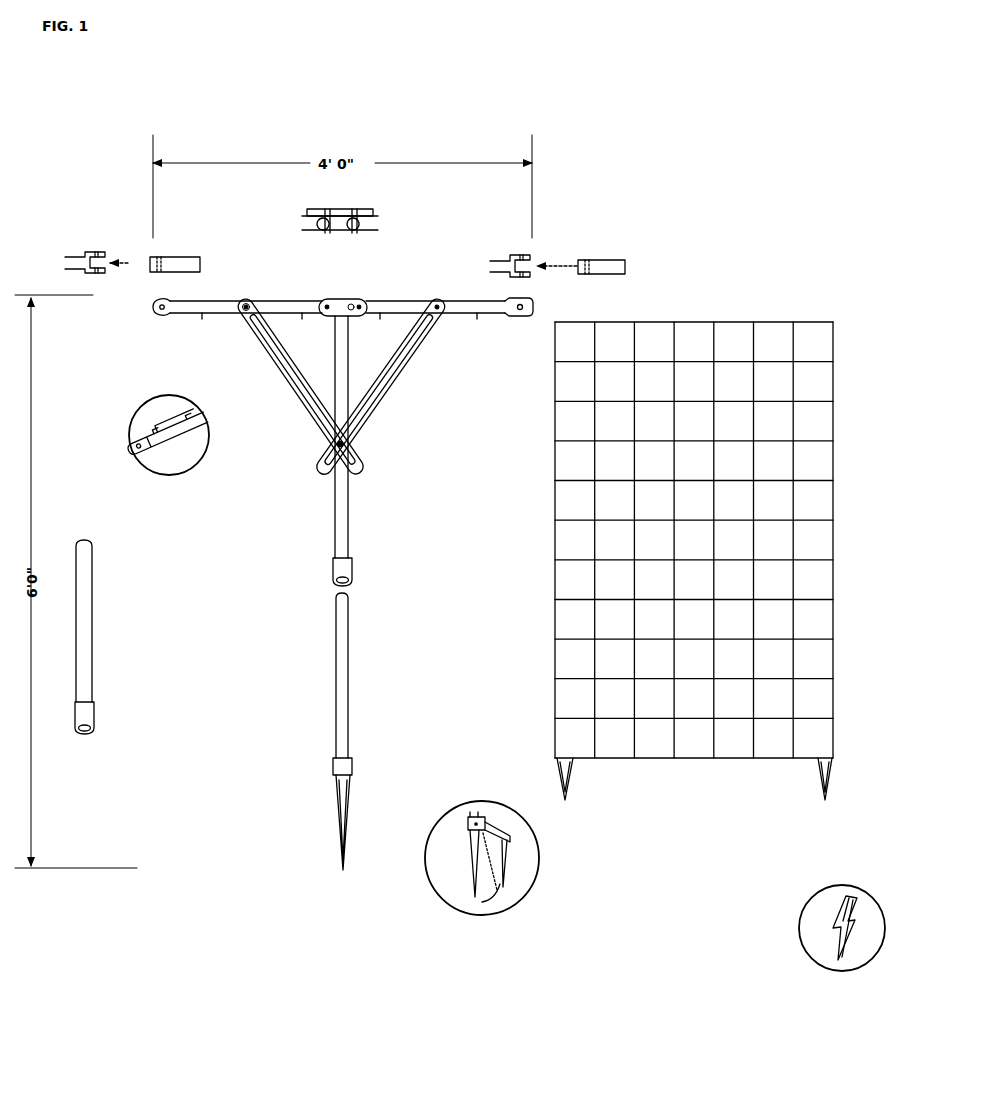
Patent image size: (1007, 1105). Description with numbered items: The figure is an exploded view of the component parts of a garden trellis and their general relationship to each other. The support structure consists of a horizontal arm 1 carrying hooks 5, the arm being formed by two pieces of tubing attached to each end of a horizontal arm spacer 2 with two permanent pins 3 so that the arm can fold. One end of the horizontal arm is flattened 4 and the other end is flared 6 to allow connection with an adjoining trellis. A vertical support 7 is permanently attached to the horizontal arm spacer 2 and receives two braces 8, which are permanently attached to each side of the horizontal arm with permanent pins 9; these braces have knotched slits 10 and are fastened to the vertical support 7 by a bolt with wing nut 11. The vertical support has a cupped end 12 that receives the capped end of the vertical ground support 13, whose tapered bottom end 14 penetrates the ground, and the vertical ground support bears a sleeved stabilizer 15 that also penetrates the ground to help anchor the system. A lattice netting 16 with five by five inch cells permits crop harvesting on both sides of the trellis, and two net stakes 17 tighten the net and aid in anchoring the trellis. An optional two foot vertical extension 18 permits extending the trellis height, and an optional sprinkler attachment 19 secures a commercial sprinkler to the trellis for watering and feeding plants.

The horizontal arm 1 is at (396, 297).
The horizontal arm spacer 2 is at (369, 295).
The permanent pins 3 is at (349, 304).
The flattened end 4 is at (147, 313).
The hooks 5 is at (188, 323).
The flared end 6 is at (537, 306).
The vertical support 7 is at (331, 501).
The braces 8 is at (276, 364).
The permanent pins 9 is at (240, 316).
The knotched slits 10 is at (311, 408).
The bolt with wing nut 11 is at (358, 444).
The vertical support cupped end 12 is at (356, 568).
The vertical ground support 13 is at (327, 687).
The tapered bottom end 14 is at (320, 798).
The sleeved stabilizer 15 is at (446, 806).
The lattice netting 16 is at (550, 497).
The net stakes 17 is at (813, 808).
The vertical extension 18 is at (328, 586).
The sprinkler attachment 19 is at (300, 212).